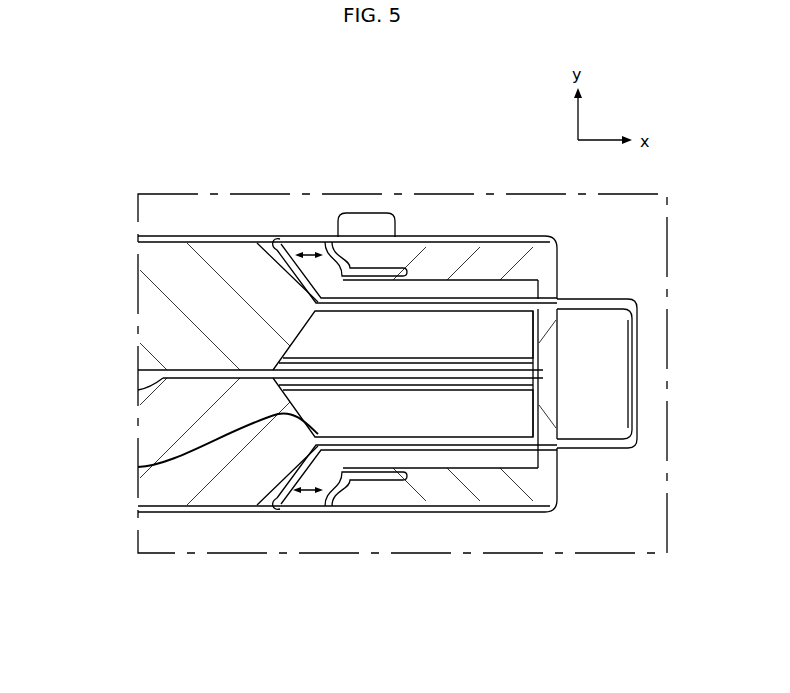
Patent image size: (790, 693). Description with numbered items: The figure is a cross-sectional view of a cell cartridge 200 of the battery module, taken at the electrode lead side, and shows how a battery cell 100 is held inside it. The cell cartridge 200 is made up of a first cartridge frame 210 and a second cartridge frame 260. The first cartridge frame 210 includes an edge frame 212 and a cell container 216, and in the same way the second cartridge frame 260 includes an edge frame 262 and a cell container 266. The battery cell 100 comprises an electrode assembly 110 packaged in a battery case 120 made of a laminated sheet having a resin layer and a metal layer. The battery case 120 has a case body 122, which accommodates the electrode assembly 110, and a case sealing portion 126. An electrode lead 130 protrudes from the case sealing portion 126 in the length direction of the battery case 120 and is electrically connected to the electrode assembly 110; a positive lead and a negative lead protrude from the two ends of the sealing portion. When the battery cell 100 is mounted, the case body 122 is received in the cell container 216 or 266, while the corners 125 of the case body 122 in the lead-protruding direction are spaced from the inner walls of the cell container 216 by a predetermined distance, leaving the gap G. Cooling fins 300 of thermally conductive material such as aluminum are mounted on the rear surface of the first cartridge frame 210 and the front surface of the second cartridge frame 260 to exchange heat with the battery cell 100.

The battery cell 100 is at (247, 143).
The electrode assembly 110 is at (226, 277).
The battery case 120 is at (282, 315).
The case body 122 is at (137, 390).
The corner 125 is at (278, 255).
The case sealing portion 126 is at (198, 446).
The electrode lead 130 is at (639, 358).
The cell cartridge 200 is at (605, 257).
The first cartridge frame 210 is at (470, 605).
The edge frame 212 is at (457, 453).
The cell container 216 is at (341, 483).
The second cartridge frame 260 is at (470, 142).
The edge frame 262 is at (447, 290).
The cell container 266 is at (353, 237).
The cooling fin 300 is at (306, 243).